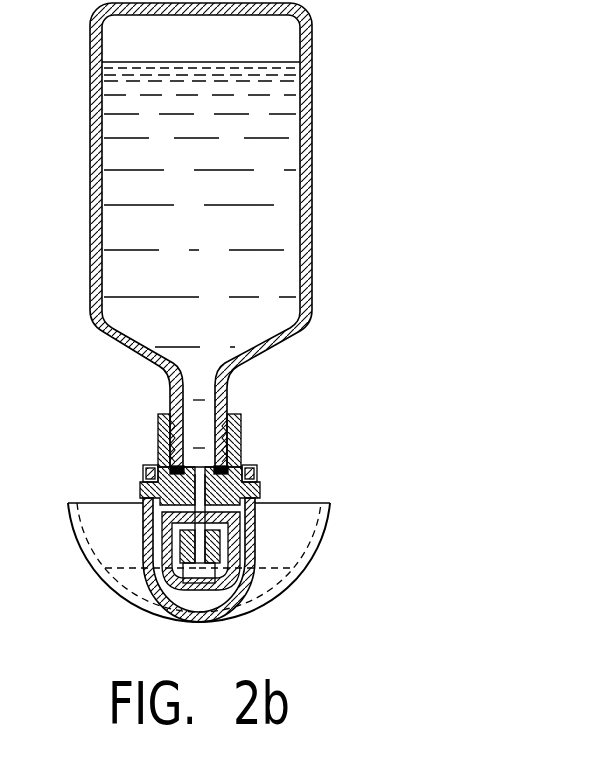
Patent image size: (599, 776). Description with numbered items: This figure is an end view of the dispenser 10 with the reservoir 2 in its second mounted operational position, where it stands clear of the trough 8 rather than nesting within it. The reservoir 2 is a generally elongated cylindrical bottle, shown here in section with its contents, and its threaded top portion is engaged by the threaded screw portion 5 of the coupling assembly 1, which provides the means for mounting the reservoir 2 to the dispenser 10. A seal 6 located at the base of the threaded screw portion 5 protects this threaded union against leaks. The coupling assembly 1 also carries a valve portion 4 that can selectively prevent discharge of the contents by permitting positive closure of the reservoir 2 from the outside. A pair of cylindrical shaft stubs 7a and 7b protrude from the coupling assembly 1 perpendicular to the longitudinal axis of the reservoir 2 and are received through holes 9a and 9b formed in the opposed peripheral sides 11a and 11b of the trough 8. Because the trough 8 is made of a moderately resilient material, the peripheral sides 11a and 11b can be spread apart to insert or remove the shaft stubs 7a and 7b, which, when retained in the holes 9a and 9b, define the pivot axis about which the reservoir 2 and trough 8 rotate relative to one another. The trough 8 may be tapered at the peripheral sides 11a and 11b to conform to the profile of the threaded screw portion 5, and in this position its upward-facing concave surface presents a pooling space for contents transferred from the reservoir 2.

The coupling assembly 1 is at (258, 515).
The reservoir 2 is at (312, 30).
The valve portion 4 is at (175, 540).
The threaded screw portion 5 is at (241, 417).
The seal 6 is at (170, 466).
The cylindrical shaft stub 7a is at (260, 488).
The cylindrical shaft stub 7b is at (140, 490).
The trough 8 is at (218, 622).
The hole 9a is at (253, 467).
The hole 9b is at (147, 467).
The dispenser 10 is at (445, 190).
The peripheral side 11a is at (240, 552).
The peripheral side 11b is at (145, 517).